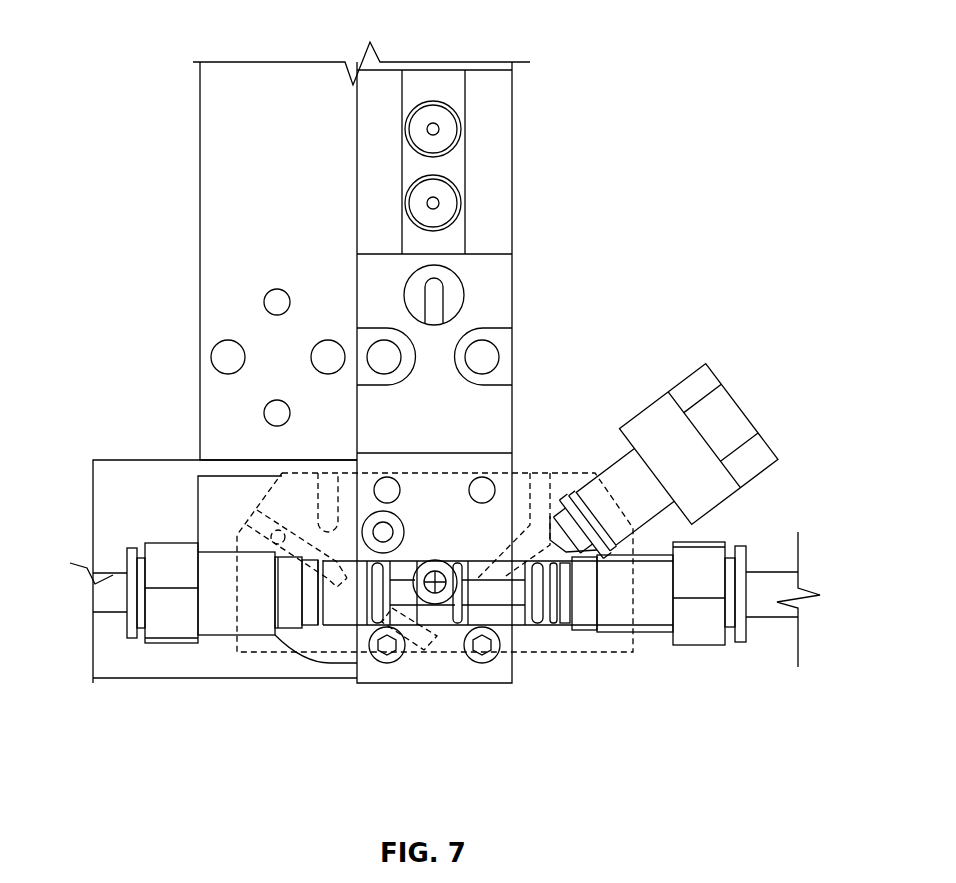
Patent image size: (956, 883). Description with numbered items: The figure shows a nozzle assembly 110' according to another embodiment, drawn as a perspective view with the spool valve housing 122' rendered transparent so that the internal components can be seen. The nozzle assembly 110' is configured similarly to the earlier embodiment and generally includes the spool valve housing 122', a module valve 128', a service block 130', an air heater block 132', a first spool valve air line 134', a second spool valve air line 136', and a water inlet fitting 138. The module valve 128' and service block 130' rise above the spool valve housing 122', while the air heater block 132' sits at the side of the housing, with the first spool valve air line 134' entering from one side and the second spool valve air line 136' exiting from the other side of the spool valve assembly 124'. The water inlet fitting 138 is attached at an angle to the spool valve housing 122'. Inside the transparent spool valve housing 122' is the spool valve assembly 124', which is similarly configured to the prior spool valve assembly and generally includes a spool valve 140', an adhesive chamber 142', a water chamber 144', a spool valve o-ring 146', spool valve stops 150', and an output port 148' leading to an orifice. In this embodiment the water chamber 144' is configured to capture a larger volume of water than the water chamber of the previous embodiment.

The nozzle assembly 110' is at (446, 417).
The service block 130' is at (241, 261).
The module valve 128' is at (480, 372).
The water inlet fitting 138 is at (597, 475).
The output port 148' is at (508, 458).
The spool valve housing 122' is at (435, 530).
The air heater block 132' is at (225, 554).
The first spool valve air line 134' is at (121, 641).
The second spool valve air line 136' is at (760, 618).
The spool valve assembly 124' is at (414, 552).
The spool valve stops 150' is at (419, 646).
The spool valve o-ring 146' is at (309, 645).
The adhesive chamber 142' is at (456, 647).
The water chamber 144' is at (530, 647).
The spool valve 140' is at (610, 641).